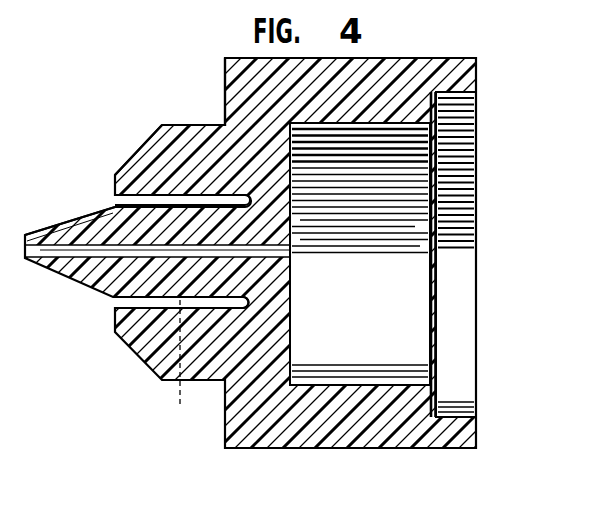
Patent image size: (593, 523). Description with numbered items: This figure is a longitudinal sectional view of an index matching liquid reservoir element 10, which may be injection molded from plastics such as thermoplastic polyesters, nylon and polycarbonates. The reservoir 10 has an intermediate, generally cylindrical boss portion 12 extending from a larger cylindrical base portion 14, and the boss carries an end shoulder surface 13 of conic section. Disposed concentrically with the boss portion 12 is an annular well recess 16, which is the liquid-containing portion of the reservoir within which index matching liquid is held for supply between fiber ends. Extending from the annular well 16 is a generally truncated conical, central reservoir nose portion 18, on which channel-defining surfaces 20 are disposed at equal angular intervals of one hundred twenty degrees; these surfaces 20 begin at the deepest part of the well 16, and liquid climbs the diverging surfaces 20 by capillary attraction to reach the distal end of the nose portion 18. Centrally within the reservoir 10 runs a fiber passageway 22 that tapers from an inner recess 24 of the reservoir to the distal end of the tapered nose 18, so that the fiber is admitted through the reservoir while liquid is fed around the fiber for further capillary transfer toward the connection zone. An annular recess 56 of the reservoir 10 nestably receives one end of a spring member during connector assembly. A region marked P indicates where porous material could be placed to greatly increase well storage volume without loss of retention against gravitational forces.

The index matching liquid reservoir element 10 is at (294, 466).
The boss portion 12 is at (173, 125).
The end shoulder surface 13 is at (146, 142).
The base portion 14 is at (390, 68).
The annular well recess 16 is at (130, 303).
The reservoir nose portion 18 is at (63, 224).
The channel-defining surfaces 20 is at (98, 222).
The fiber passageway 22 is at (282, 247).
The inner recess 24 is at (383, 302).
The annular recess 56 is at (450, 416).
The porous material P is at (173, 364).